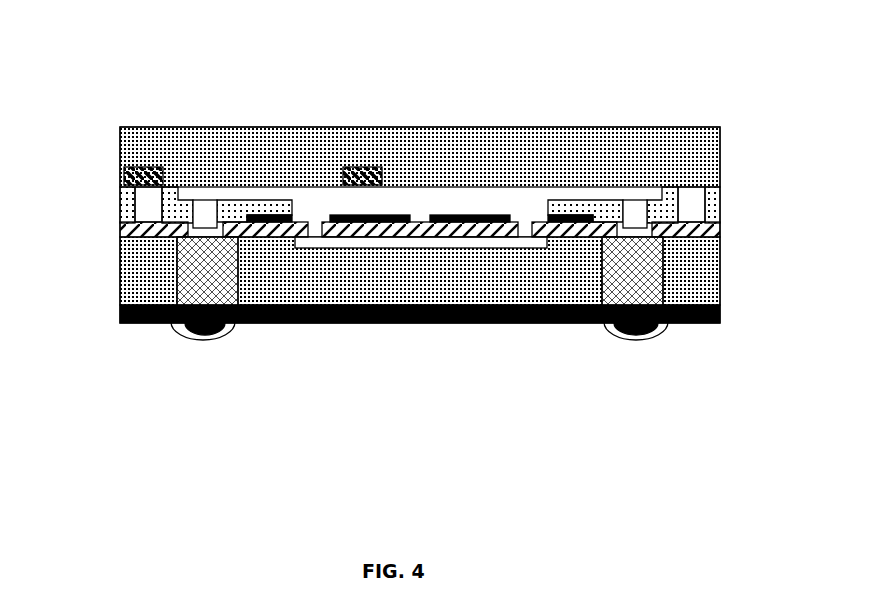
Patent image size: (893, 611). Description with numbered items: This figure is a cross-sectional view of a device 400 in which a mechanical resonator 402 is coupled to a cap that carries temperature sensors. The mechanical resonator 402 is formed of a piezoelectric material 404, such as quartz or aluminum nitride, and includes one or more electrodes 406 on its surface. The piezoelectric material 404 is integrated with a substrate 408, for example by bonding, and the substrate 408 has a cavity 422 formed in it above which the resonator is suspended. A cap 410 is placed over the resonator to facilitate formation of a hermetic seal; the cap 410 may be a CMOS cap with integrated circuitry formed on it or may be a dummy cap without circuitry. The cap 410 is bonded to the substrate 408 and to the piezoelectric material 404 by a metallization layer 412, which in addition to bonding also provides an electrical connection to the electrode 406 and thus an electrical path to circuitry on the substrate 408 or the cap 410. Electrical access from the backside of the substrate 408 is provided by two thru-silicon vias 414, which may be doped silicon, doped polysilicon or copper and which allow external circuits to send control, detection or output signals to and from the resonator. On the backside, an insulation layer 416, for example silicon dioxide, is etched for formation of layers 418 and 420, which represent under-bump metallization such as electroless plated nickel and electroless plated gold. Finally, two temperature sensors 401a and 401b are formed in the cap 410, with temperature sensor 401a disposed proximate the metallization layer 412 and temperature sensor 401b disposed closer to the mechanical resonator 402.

The device 400 is at (102, 80).
The temperature sensor 401a is at (148, 163).
The temperature sensor 401b is at (348, 165).
The mechanical resonator 402 is at (479, 204).
The piezoelectric material 404 is at (423, 227).
The electrode 406 is at (342, 215).
The substrate 408 is at (420, 271).
The cap 410 is at (420, 157).
The metallization layer 412 is at (122, 205).
The thru-silicon via 414 is at (420, 271).
The insulation layer 416 is at (360, 323).
The under-bump metallization layer 418 is at (183, 337).
The under-bump metallization layer 420 is at (217, 338).
The cavity 422 is at (493, 249).